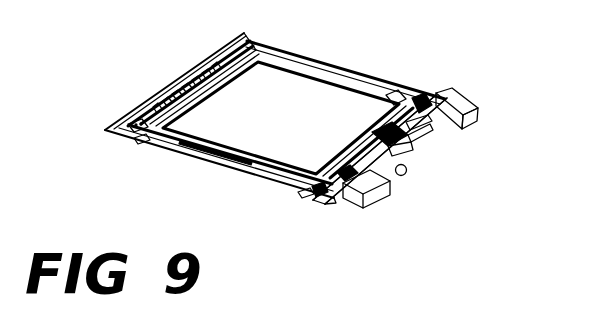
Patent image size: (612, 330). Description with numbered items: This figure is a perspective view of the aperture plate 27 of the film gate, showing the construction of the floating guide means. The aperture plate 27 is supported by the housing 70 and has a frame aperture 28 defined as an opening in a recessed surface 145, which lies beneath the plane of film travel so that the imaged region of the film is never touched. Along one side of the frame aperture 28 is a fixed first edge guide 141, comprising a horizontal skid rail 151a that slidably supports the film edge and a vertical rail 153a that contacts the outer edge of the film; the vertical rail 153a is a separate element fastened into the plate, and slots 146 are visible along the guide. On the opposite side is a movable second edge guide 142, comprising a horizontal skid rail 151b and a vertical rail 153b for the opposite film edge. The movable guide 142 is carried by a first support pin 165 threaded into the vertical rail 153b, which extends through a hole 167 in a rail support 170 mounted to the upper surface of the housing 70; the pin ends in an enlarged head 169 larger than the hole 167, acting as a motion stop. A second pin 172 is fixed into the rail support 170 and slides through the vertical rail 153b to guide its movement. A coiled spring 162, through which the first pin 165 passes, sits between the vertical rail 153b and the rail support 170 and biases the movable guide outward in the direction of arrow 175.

The fixed first edge guide 141 is at (188, 42).
The slots 146 is at (162, 100).
The aperture plate 27 is at (267, 55).
The frame aperture 28 is at (294, 84).
The recessed surface 145 is at (192, 145).
The horizontal skid rail 151a is at (140, 142).
The horizontal skid rail 151b is at (300, 197).
The vertical rail 153a is at (134, 128).
The vertical rail 153b is at (316, 196).
The arrow 175 is at (352, 115).
The movable second edge guide 142 is at (463, 58).
The second pin 172 is at (330, 122).
The coiled spring 162 is at (392, 98).
The housing 70 is at (473, 112).
The first support pin 165 is at (413, 148).
The hole 167 is at (400, 170).
The enlarged head 169 is at (427, 162).
The rail support 170 is at (404, 185).